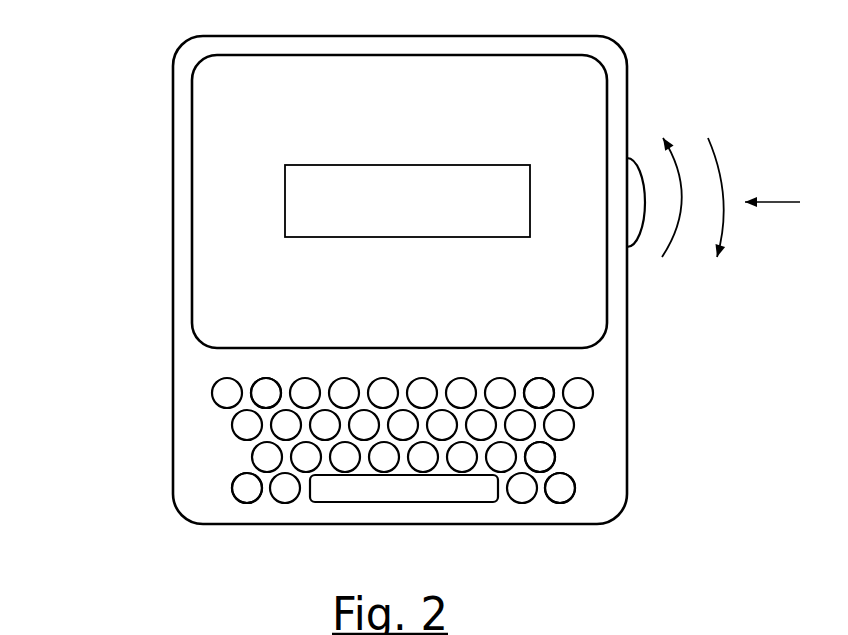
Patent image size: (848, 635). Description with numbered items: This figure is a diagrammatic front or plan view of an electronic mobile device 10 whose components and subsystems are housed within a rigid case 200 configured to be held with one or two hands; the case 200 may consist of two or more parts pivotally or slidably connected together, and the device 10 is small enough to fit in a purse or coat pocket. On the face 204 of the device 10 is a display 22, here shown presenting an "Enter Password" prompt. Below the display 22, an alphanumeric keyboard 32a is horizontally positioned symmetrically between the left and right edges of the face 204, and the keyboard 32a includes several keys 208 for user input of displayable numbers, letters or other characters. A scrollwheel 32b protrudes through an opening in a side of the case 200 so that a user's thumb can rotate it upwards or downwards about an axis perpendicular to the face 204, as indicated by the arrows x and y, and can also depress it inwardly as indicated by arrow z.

The mobile device 10 is at (173, 27).
The case 200 is at (173, 170).
The display 22 is at (262, 302).
The face 204 is at (188, 407).
The keys 208 is at (267, 386).
The keyboard 32a is at (582, 462).
The scrollwheel 32b is at (630, 243).